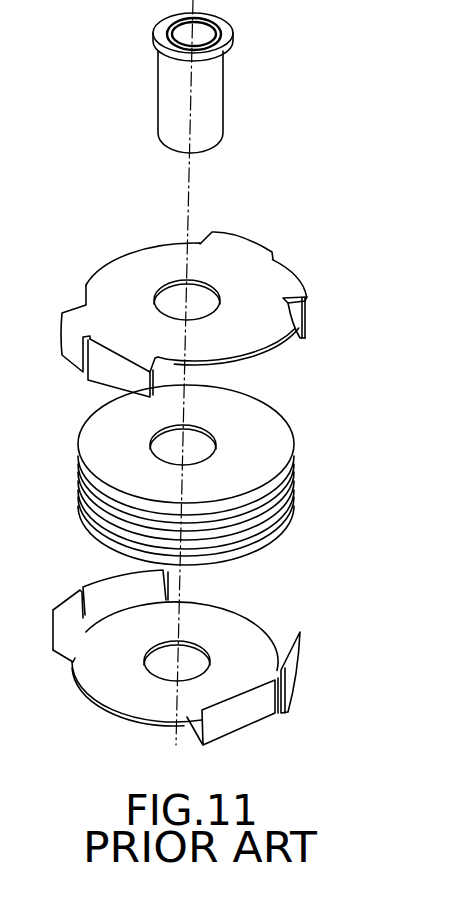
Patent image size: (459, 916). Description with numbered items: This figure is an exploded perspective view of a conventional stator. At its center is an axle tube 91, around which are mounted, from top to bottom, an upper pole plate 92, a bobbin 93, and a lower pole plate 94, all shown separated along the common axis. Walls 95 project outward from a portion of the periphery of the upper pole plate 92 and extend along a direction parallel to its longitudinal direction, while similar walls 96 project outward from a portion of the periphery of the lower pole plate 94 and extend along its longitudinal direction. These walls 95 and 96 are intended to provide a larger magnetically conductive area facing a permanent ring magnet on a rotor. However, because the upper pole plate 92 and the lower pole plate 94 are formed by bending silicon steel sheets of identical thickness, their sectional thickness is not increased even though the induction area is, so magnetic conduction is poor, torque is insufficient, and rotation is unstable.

The axle tube 91 is at (167, 112).
The upper pole plate 92 is at (307, 270).
The bobbin 93 is at (280, 445).
The lower pole plate 94 is at (252, 648).
The walls 95 is at (313, 318).
The walls 96 is at (297, 675).